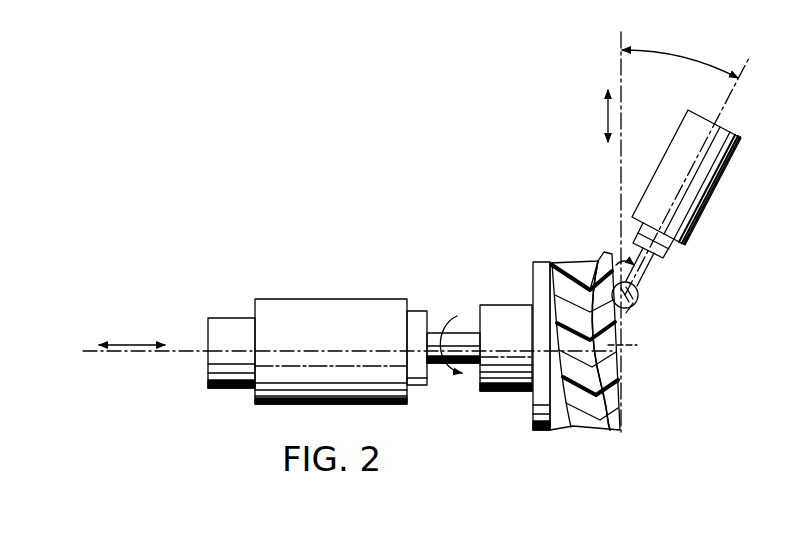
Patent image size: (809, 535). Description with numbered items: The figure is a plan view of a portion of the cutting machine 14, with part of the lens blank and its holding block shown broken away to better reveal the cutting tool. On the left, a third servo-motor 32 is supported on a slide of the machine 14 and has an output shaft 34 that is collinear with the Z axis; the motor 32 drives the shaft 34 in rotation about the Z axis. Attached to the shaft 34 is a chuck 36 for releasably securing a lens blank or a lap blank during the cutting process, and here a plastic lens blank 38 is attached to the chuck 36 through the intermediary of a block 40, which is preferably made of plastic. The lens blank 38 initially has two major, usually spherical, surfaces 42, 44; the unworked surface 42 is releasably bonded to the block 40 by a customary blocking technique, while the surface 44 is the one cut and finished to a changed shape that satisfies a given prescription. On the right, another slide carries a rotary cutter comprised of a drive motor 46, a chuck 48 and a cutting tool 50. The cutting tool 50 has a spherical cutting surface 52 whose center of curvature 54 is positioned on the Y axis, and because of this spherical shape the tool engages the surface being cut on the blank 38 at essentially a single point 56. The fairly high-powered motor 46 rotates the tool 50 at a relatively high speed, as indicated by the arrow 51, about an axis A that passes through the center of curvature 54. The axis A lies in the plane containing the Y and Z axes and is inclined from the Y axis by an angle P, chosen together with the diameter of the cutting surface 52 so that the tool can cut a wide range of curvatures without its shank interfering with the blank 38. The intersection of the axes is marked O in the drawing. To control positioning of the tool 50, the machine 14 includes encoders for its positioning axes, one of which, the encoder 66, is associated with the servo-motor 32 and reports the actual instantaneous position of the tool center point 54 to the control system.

The cutting machine 14 is at (492, 202).
The third servo-motor 32 is at (350, 298).
The output shaft 34 is at (471, 333).
The chuck 36 is at (505, 305).
The lens blank 38 is at (605, 348).
The block 40 is at (566, 262).
The unworked surface 42 is at (582, 426).
The cut surface 44 is at (602, 382).
The drive motor 46 is at (735, 155).
The chuck 48 is at (666, 250).
The cutting tool 50 is at (639, 293).
The arrow 51 is at (651, 265).
The spherical cutting surface 52 is at (631, 311).
The center of curvature 54 is at (634, 302).
The single point 56 is at (578, 276).
The encoder 66 is at (228, 390).
The Z axis Z is at (124, 355).
The Y axis Y is at (617, 36).
The axis A is at (751, 66).
The angle P is at (664, 51).
The origin point O is at (631, 355).